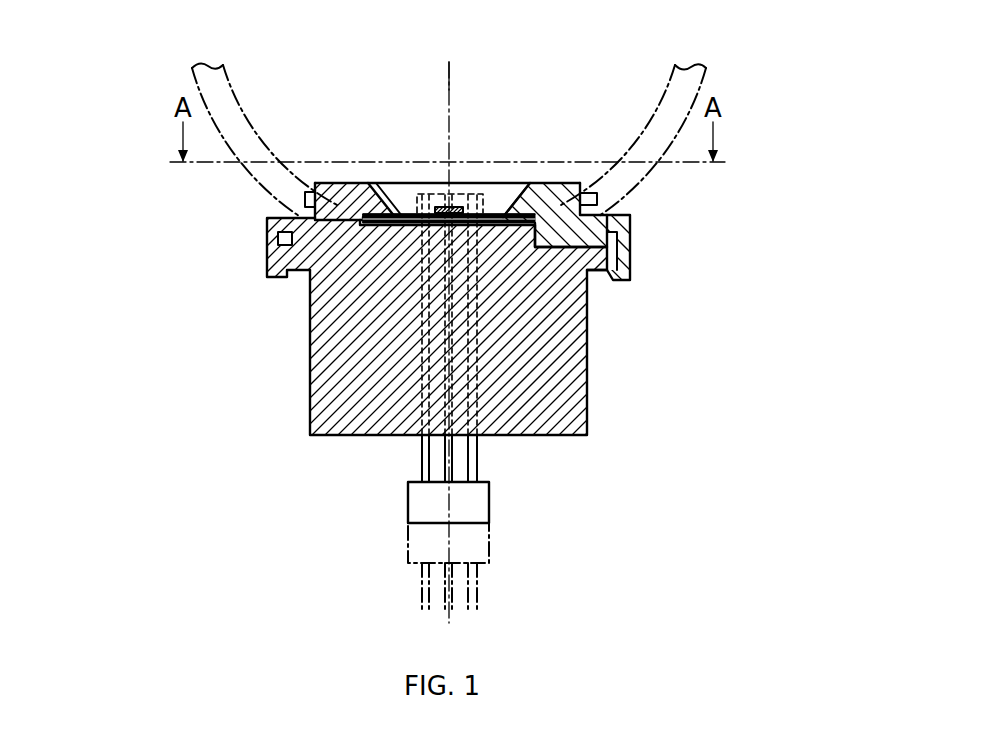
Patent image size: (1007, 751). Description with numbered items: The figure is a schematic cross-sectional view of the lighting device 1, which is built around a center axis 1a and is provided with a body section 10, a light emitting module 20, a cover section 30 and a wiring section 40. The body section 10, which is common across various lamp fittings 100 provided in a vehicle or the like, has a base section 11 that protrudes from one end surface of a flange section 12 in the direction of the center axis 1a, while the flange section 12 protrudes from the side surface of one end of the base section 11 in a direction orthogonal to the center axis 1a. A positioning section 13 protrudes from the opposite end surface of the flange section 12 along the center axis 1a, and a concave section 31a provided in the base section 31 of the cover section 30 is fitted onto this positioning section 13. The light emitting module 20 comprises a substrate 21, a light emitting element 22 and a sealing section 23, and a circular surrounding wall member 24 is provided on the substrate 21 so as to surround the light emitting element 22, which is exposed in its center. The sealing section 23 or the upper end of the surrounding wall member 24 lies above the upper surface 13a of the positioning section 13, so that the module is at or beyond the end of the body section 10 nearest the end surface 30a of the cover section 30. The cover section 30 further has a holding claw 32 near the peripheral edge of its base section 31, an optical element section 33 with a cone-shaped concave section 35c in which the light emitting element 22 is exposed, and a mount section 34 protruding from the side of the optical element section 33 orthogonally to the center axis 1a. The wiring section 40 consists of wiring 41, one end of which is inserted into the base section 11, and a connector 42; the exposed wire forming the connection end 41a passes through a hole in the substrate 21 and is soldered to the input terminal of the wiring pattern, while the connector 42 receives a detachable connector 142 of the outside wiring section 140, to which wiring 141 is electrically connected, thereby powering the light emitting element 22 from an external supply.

The lighting device 1 is at (751, 93).
The center axis 1a is at (460, 78).
The lamp fitting 100 is at (188, 74).
The body section 10 is at (182, 247).
The base section 11 is at (340, 323).
The flange section 12 is at (288, 260).
The positioning section 13 is at (362, 236).
The upper surface 13a is at (367, 216).
The light emitting module 20 is at (432, 84).
The substrate 21 is at (375, 212).
The light emitting element 22 is at (440, 208).
The sealing section 23 is at (430, 212).
The surrounding wall member 24 is at (398, 214).
The cover section 30 is at (734, 172).
The end surface 30a is at (557, 180).
The base section 31 is at (568, 232).
The concave section 31a is at (532, 237).
The holding claw 32 is at (633, 257).
The optical element section 33 is at (602, 211).
The mount section 34 is at (588, 201).
The cone-shaped concave section 35c is at (516, 192).
The wiring section 40 is at (326, 450).
The wiring 41 is at (420, 453).
The connection end 41a is at (468, 210).
The connector 42 is at (423, 500).
The outside wiring section 140 is at (594, 523).
The wiring 141 is at (480, 590).
The connector 142 is at (492, 543).